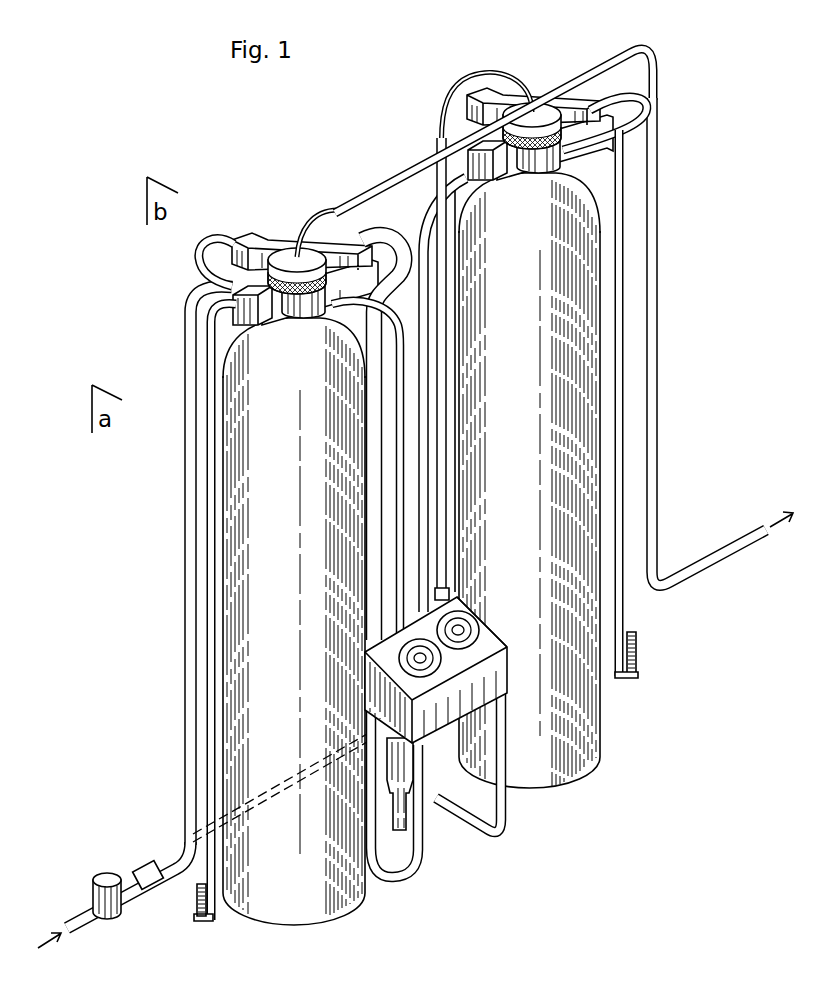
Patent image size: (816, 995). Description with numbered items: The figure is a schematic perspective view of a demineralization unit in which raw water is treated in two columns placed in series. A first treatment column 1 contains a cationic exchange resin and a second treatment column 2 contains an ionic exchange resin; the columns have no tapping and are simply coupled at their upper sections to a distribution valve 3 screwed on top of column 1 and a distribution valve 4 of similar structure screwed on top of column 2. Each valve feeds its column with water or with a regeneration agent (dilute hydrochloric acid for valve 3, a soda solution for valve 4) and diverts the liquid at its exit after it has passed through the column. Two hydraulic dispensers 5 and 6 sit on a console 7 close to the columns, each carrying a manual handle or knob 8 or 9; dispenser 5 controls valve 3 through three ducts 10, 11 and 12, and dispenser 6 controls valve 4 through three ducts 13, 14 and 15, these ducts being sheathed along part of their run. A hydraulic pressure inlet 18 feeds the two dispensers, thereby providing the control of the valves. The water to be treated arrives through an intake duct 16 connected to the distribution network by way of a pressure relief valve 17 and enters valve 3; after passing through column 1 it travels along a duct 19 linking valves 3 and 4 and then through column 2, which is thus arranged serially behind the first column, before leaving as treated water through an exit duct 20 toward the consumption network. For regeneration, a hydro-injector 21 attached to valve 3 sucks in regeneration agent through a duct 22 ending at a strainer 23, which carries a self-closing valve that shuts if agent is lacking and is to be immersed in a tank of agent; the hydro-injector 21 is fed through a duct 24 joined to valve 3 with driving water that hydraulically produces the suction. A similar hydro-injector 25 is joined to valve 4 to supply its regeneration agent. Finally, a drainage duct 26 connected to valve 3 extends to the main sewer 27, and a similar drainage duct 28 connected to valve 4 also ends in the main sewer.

The treatment column 1 is at (320, 588).
The treatment column 2 is at (547, 450).
The distribution valve 3 is at (290, 228).
The distribution valve 4 is at (541, 66).
The hydraulic dispenser 5 is at (428, 668).
The hydraulic dispenser 6 is at (500, 648).
The console 7 is at (448, 722).
The manual handle or knob 8 is at (370, 662).
The manual handle or knob 9 is at (470, 628).
The duct 10 is at (294, 346).
The duct 11 is at (342, 200).
The duct 12 is at (400, 232).
The duct 13 is at (442, 185).
The duct 14 is at (508, 70).
The duct 15 is at (636, 100).
The duct 16 is at (186, 560).
The pressure relief valve 17 is at (95, 898).
The hydraulic pressure inlet 18 is at (168, 856).
The duct 19 is at (410, 162).
The duct 20 is at (659, 224).
The hydro-injector 21 is at (255, 228).
The duct 22 is at (214, 592).
The strainer 23 is at (200, 918).
The duct 24 is at (205, 262).
The hydro-injector 25 is at (478, 92).
The drainage duct 26 is at (410, 350).
The main sewer 27 is at (395, 785).
The drainage duct 28 is at (420, 286).